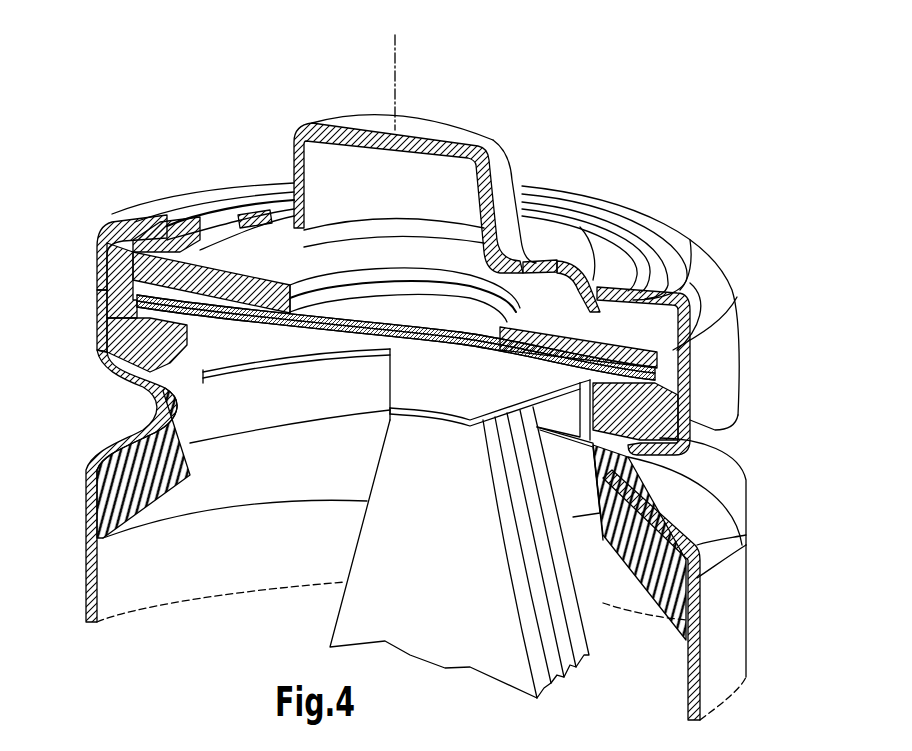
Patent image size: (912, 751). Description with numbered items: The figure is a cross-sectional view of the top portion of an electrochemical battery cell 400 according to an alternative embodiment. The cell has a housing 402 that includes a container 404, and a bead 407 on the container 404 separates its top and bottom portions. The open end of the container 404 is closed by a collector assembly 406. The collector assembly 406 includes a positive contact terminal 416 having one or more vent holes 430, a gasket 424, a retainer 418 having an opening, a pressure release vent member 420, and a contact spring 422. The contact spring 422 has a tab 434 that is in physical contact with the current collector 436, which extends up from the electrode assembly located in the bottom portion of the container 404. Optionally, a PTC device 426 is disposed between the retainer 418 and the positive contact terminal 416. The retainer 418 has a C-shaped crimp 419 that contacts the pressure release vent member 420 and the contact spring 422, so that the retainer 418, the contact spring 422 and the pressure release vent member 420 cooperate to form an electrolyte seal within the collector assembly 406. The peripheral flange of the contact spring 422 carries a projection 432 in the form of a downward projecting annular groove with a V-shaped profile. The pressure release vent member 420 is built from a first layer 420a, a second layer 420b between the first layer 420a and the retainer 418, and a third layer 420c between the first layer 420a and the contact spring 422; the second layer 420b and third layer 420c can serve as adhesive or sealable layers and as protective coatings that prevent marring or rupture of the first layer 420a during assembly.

The electrochemical battery cell 400 is at (188, 124).
The housing 402 is at (62, 316).
The container 404 is at (85, 520).
The collector assembly 406 is at (596, 126).
The bead 407 is at (122, 424).
The positive contact terminal 416 is at (495, 142).
The retainer 418 is at (127, 282).
The crimp 419 is at (195, 343).
The pressure release vent member 420 is at (340, 348).
The first layer 420a is at (657, 380).
The second layer 420b is at (668, 374).
The third layer 420c is at (657, 390).
The contact spring 422 is at (243, 340).
The gasket 424 is at (675, 290).
The PTC device 426 is at (562, 195).
The vent holes 430 is at (258, 217).
The projection 432 is at (135, 330).
The tab 434 is at (410, 395).
The current collector 436 is at (373, 537).